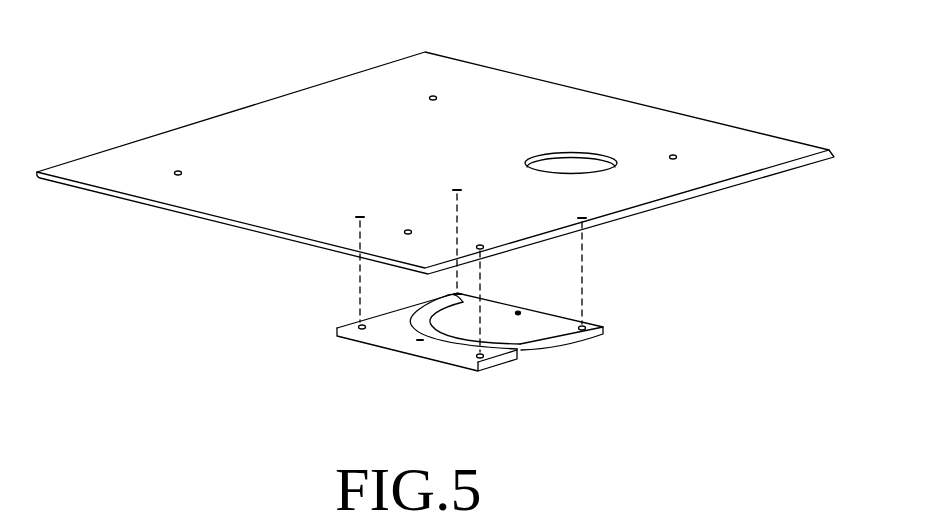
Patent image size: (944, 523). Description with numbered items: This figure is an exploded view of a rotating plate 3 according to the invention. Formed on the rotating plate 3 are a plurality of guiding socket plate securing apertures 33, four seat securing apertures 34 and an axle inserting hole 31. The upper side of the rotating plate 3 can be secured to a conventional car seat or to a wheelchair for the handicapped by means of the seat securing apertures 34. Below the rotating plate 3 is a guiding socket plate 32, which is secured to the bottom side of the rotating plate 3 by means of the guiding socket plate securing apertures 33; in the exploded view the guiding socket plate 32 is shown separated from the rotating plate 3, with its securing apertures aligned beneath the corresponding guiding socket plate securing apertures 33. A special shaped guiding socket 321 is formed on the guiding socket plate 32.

The rotating plate 3 is at (741, 155).
The axle inserting hole 31 is at (575, 163).
The guiding socket plate 32 is at (547, 326).
The guiding socket 321 is at (423, 328).
The guiding socket plate securing apertures 33 is at (362, 214).
The seat securing apertures 34 is at (180, 168).